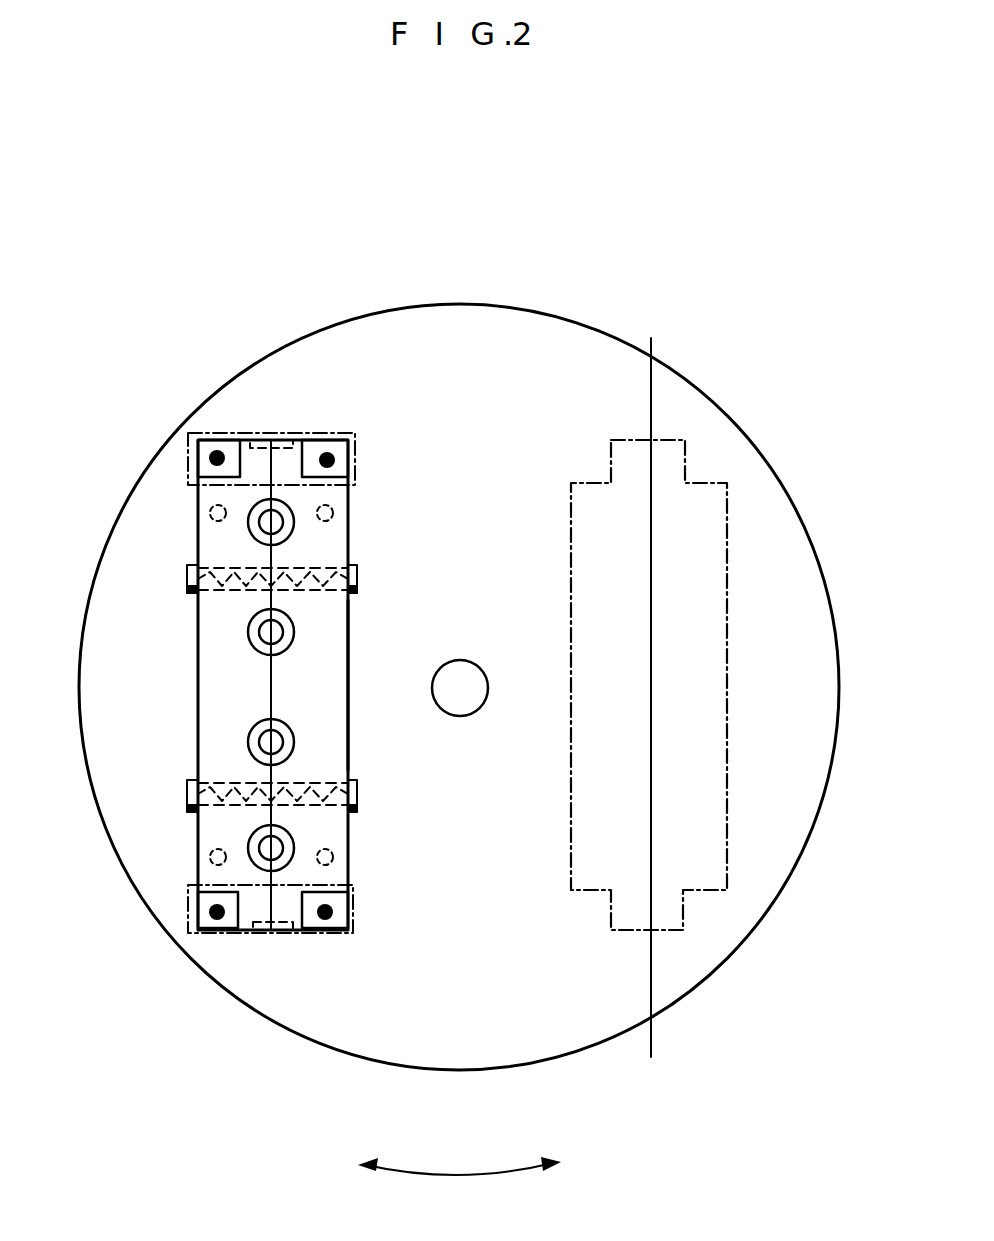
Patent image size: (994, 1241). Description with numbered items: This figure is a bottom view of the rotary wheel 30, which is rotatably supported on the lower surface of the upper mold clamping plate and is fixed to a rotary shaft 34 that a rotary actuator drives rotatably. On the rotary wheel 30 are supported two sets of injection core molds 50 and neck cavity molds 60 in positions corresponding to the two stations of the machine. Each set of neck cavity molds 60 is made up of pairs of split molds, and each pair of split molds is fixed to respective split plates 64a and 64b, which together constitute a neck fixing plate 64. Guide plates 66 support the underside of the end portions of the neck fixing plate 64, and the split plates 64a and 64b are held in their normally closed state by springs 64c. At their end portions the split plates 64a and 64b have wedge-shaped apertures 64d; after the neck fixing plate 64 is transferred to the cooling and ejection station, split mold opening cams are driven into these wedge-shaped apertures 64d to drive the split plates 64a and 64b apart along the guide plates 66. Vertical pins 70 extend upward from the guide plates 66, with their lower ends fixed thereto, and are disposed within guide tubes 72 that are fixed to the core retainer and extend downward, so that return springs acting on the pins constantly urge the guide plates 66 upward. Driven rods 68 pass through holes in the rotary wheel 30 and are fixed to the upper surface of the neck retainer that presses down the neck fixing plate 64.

The rotary wheel 30 is at (573, 321).
The rotary shaft 34 is at (474, 698).
The injection core mold 50 is at (275, 630).
The neck cavity mold 60 is at (289, 656).
The neck fixing plate 64 is at (727, 632).
The split plate 64a is at (213, 652).
The split plate 64b is at (328, 640).
The spring 64c is at (187, 597).
The wedge-shaped aperture 64d is at (258, 440).
The guide plate 66 is at (283, 433).
The driven rod 68 is at (333, 510).
The vertical pin 70 is at (327, 452).
The guide tube 72 is at (347, 438).